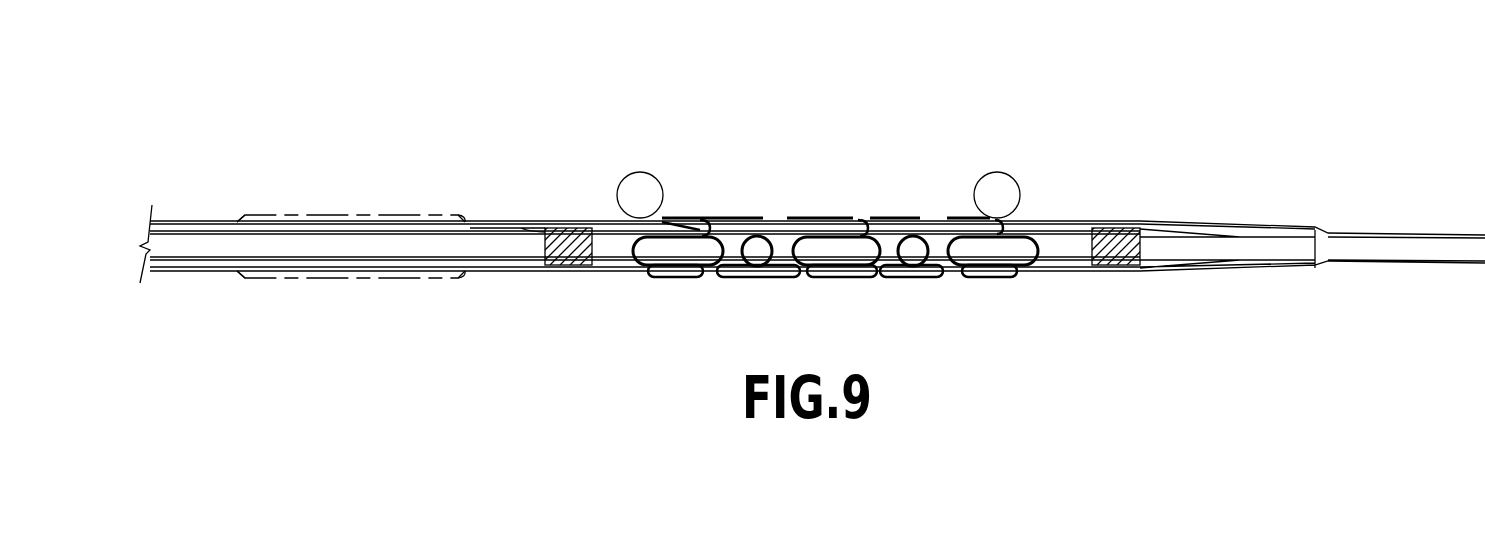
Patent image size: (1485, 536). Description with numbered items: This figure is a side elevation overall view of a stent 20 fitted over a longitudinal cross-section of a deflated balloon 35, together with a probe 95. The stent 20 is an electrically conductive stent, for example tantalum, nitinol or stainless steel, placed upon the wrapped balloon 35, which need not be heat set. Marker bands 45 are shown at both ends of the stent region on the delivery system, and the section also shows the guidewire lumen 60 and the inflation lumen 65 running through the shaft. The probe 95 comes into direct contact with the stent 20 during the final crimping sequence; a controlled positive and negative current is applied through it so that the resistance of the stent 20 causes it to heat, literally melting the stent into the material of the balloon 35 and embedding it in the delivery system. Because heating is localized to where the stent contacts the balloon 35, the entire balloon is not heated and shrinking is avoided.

The stent 20 is at (793, 238).
The balloon 35 is at (1185, 222).
The marker band 45 is at (563, 240).
The guidewire lumen 60 is at (492, 235).
The inflation lumen 65 is at (519, 226).
The probe 95 is at (630, 175).